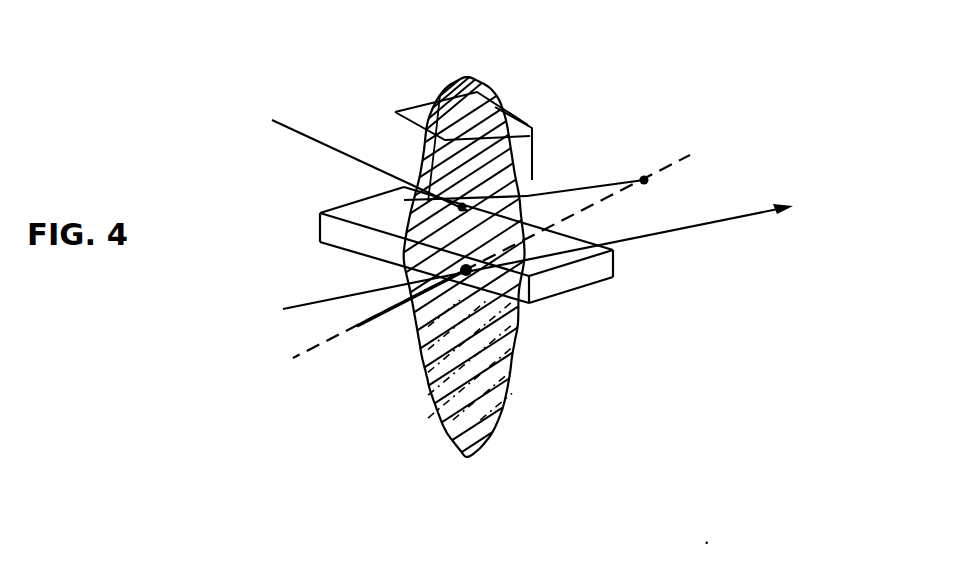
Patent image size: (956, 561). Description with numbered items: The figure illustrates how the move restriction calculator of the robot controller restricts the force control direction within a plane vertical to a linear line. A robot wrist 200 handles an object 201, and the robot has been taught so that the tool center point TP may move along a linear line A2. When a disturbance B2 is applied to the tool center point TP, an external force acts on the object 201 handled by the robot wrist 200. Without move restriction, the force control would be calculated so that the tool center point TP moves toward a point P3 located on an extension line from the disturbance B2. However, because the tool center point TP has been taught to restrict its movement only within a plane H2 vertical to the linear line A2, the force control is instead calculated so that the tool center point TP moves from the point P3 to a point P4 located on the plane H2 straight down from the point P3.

The robot wrist 200 is at (447, 86).
The object handled 201 is at (320, 226).
The point P4 is at (460, 205).
The point P3 is at (530, 173).
The linear line A2 is at (558, 250).
The disturbance B2 is at (491, 256).
The tool center point TP is at (522, 294).
The plane H2 is at (507, 398).